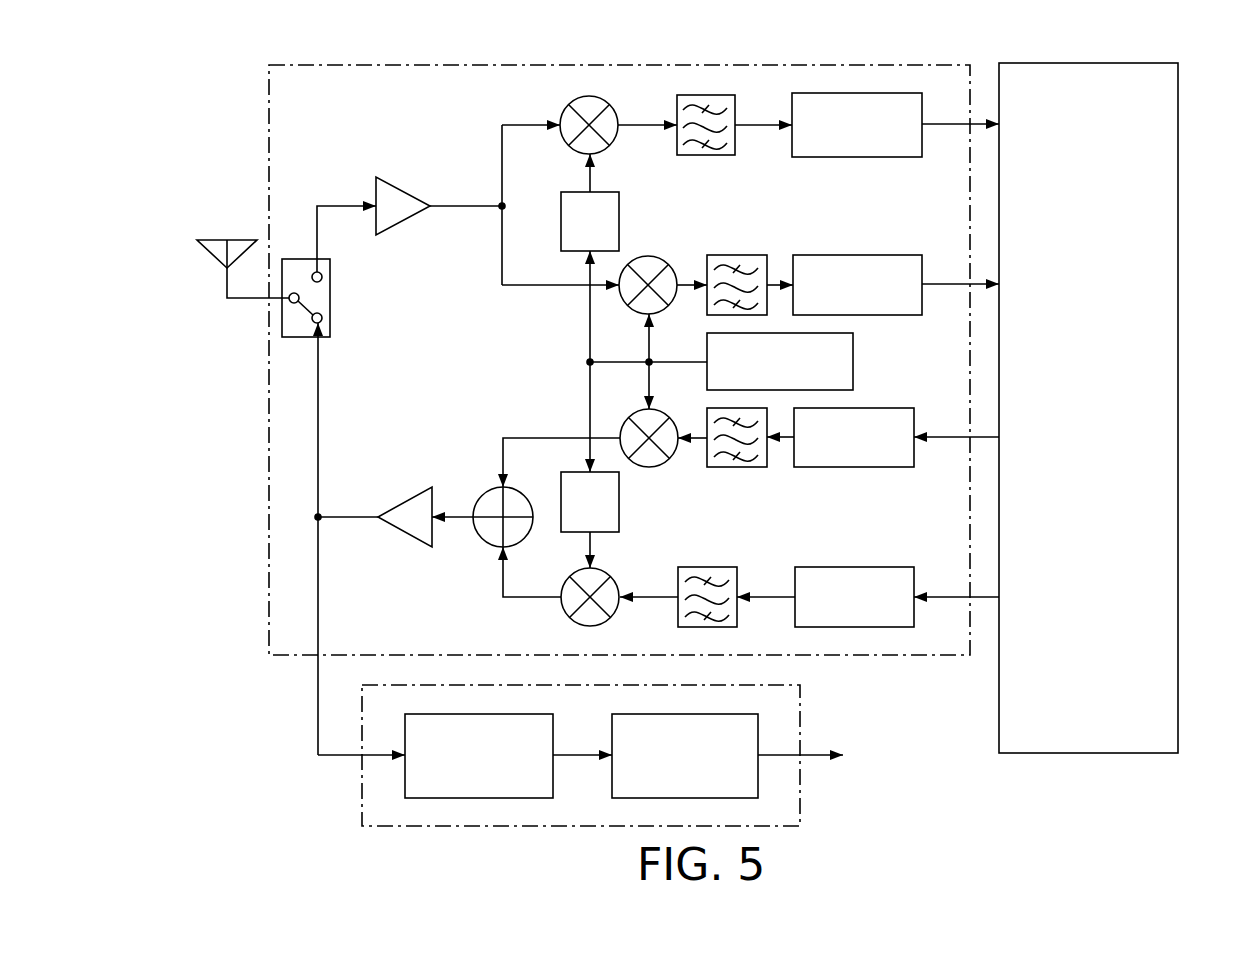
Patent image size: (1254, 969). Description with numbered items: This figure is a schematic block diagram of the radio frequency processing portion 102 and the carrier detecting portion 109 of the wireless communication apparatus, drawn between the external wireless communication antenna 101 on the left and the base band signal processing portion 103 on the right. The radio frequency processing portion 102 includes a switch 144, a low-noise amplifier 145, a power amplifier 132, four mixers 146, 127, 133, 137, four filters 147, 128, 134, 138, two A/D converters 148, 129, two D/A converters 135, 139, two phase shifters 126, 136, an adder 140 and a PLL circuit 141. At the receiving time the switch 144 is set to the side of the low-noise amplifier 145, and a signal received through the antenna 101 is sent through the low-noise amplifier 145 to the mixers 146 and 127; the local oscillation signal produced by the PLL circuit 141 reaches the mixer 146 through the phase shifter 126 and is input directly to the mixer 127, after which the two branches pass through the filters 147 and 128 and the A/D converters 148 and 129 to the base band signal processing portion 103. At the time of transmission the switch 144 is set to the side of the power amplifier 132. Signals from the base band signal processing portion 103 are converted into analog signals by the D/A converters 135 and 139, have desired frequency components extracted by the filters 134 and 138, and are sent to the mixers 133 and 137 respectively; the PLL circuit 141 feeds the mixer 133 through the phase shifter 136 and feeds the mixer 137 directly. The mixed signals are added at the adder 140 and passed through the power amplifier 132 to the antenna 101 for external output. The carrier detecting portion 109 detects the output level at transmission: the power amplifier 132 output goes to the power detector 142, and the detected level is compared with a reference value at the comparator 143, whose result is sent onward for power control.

The external wireless communication antenna 101 is at (207, 240).
The radio frequency processing portion 102 is at (430, 65).
The base band signal processing portion 103 is at (1178, 408).
The carrier detecting portion 109 is at (800, 710).
The phase shifter 126 is at (619, 204).
The mixer 127 is at (660, 258).
The filter 128 is at (740, 255).
The A/D converter 129 is at (856, 255).
The power amplifier 132 is at (406, 500).
The mixer 133 is at (568, 614).
The filter 134 is at (708, 567).
The D/A converter 135 is at (855, 567).
The phase shifter 136 is at (619, 520).
The mixer 137 is at (650, 467).
The filter 138 is at (737, 467).
The D/A converter 139 is at (853, 467).
The adder 140 is at (482, 540).
The PLL circuit 141 is at (853, 358).
The power detector 142 is at (480, 714).
The comparator 143 is at (683, 714).
The switch 144 is at (330, 298).
The low-noise amplifier 145 is at (403, 192).
The mixer 146 is at (594, 97).
The filter 147 is at (708, 95).
The A/D converter 148 is at (855, 93).